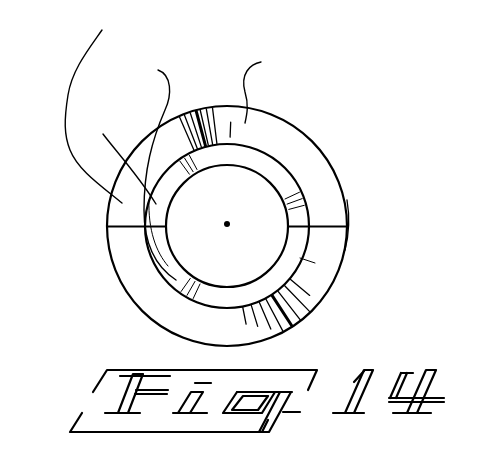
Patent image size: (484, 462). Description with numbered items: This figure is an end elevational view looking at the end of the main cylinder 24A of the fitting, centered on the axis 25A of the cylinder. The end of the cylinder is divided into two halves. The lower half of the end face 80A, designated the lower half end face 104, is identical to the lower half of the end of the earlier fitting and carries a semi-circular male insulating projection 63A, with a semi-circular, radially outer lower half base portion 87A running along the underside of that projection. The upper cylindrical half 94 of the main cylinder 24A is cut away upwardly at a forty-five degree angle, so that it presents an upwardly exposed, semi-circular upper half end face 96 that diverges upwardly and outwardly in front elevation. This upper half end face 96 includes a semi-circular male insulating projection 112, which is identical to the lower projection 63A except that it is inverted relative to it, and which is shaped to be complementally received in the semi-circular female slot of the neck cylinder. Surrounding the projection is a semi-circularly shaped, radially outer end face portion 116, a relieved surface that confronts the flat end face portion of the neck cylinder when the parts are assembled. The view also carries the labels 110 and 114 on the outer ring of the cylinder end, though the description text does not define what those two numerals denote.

The upper cylindrical half 94 is at (103, 101).
The semi-circular male insulating projection 112 is at (192, 195).
The lower half semi-circular male projection 63A is at (113, 152).
The upper half end face 96 is at (215, 47).
The radially outer end face portion 116 is at (278, 82).
The end face 80A is at (378, 306).
The outer surface 110 is at (394, 127).
The outer ring 114 is at (397, 177).
The lower half end face 104 is at (360, 248).
The axis 25A is at (260, 250).
The radially outer lower half base portion 87A is at (160, 308).
The main cylinder 24A is at (283, 341).